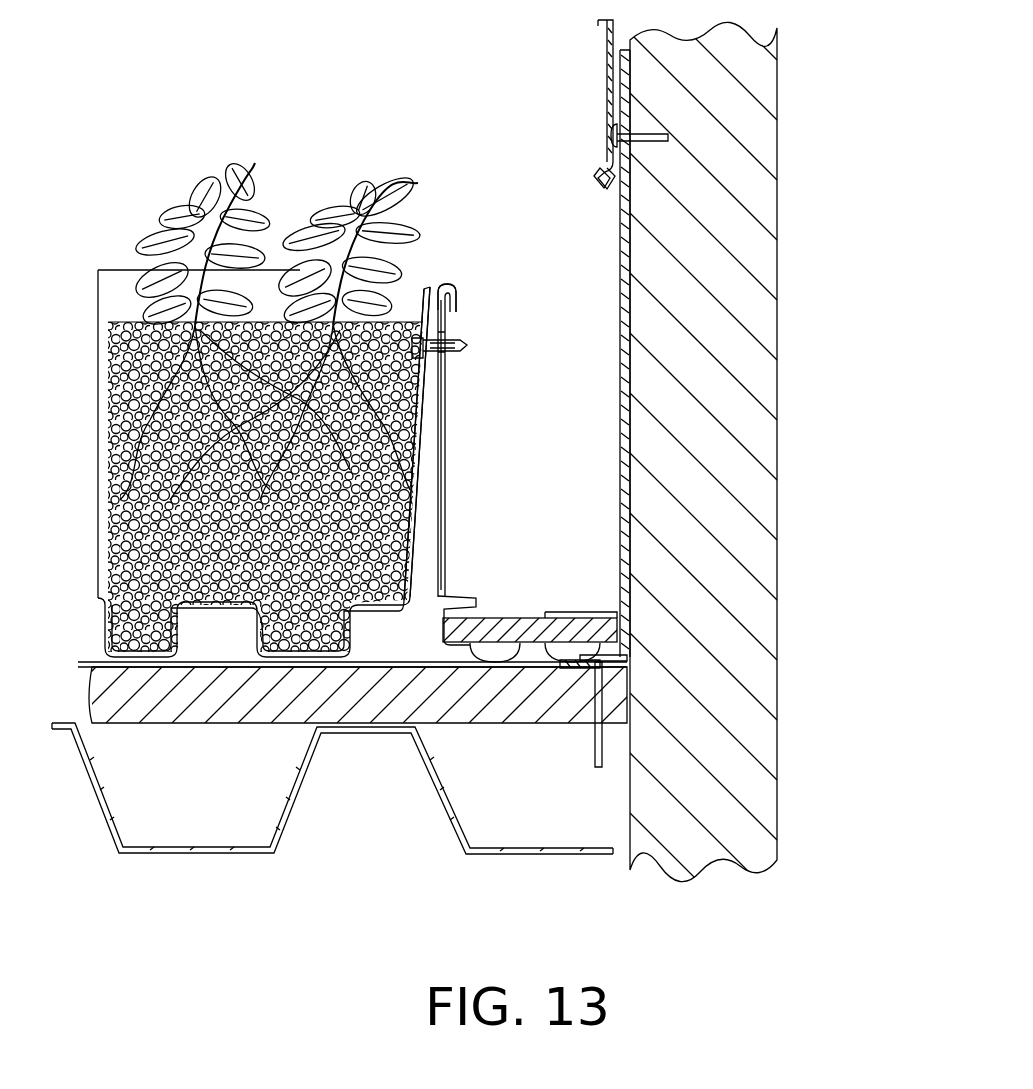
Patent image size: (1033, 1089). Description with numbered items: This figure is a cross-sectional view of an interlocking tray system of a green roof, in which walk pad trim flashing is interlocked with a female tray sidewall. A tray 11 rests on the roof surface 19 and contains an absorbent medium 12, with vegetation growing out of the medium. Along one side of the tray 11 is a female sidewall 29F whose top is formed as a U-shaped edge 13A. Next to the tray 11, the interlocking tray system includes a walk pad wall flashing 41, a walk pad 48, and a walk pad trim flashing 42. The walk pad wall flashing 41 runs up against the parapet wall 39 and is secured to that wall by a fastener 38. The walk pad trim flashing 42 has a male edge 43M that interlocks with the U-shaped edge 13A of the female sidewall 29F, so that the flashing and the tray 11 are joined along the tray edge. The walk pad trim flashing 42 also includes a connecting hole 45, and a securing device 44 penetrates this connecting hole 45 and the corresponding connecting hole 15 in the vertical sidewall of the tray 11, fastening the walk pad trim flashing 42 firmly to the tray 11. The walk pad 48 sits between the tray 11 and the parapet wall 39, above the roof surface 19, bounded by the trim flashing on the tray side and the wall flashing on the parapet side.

The tray 11 is at (418, 508).
The absorbent medium 12 is at (340, 533).
The U-shaped edge 13A is at (445, 271).
The connecting hole 15 is at (423, 338).
The roof surface 19 is at (270, 705).
The female sidewall 29F is at (422, 471).
The fastener 38 is at (640, 132).
The parapet wall 39 is at (720, 690).
The walk pad wall flashing 41 is at (620, 243).
The walk pad trim flashing 42 is at (447, 421).
The male edge 43M is at (447, 381).
The securing device 44 is at (468, 345).
The connecting hole 45 is at (447, 338).
The walk pad 48 is at (530, 618).